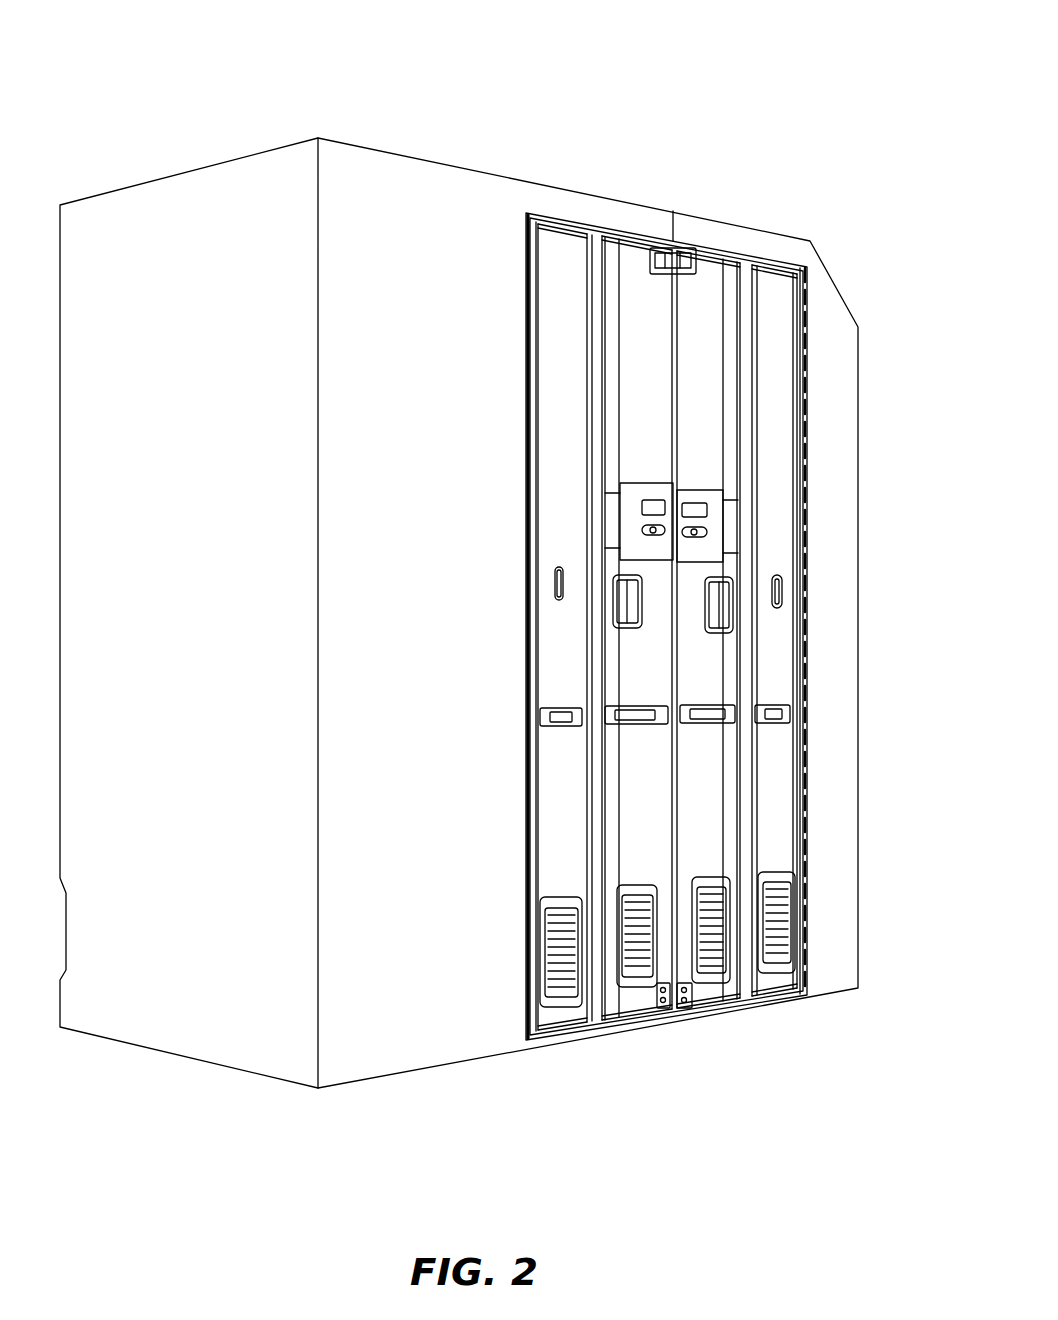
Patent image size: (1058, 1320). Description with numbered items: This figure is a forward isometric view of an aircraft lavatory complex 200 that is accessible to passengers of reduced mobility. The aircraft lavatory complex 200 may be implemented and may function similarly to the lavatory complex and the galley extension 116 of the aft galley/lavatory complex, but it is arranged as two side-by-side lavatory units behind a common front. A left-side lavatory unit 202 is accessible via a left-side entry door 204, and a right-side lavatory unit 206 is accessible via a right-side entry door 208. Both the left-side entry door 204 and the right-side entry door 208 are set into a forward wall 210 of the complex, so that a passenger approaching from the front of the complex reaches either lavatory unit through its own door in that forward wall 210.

The aircraft lavatory complex 200 is at (86, 57).
The galley extension 116 is at (314, 119).
The forward wall 210 is at (370, 258).
The left-side lavatory unit 202 is at (465, 148).
The left-side entry door 204 is at (644, 800).
The right-side lavatory unit 206 is at (883, 233).
The right-side entry door 208 is at (725, 800).